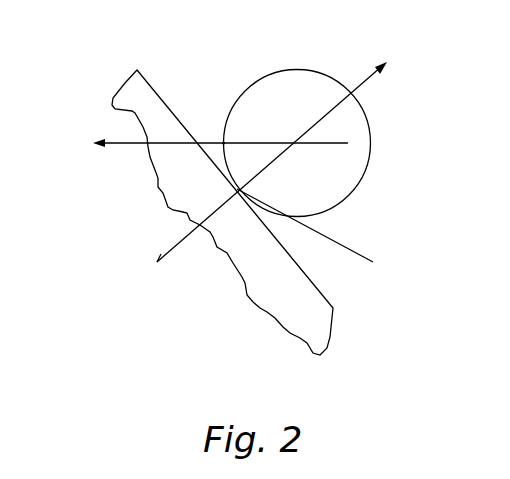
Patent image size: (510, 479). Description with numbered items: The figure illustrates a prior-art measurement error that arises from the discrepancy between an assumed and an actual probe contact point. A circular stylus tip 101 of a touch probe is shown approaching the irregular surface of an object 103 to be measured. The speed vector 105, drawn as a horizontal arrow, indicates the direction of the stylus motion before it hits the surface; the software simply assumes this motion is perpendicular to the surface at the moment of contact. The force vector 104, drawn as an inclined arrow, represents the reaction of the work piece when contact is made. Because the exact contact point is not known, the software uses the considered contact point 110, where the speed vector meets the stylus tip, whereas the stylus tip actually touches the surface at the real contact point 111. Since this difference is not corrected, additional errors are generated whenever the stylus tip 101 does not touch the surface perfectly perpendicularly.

The stylus tip 101 is at (343, 185).
The object to be measured 103 is at (273, 303).
The force vector 104 is at (165, 253).
The speed vector 105 is at (122, 145).
The considered contact point 110 is at (223, 143).
The real contact point 111 is at (373, 262).